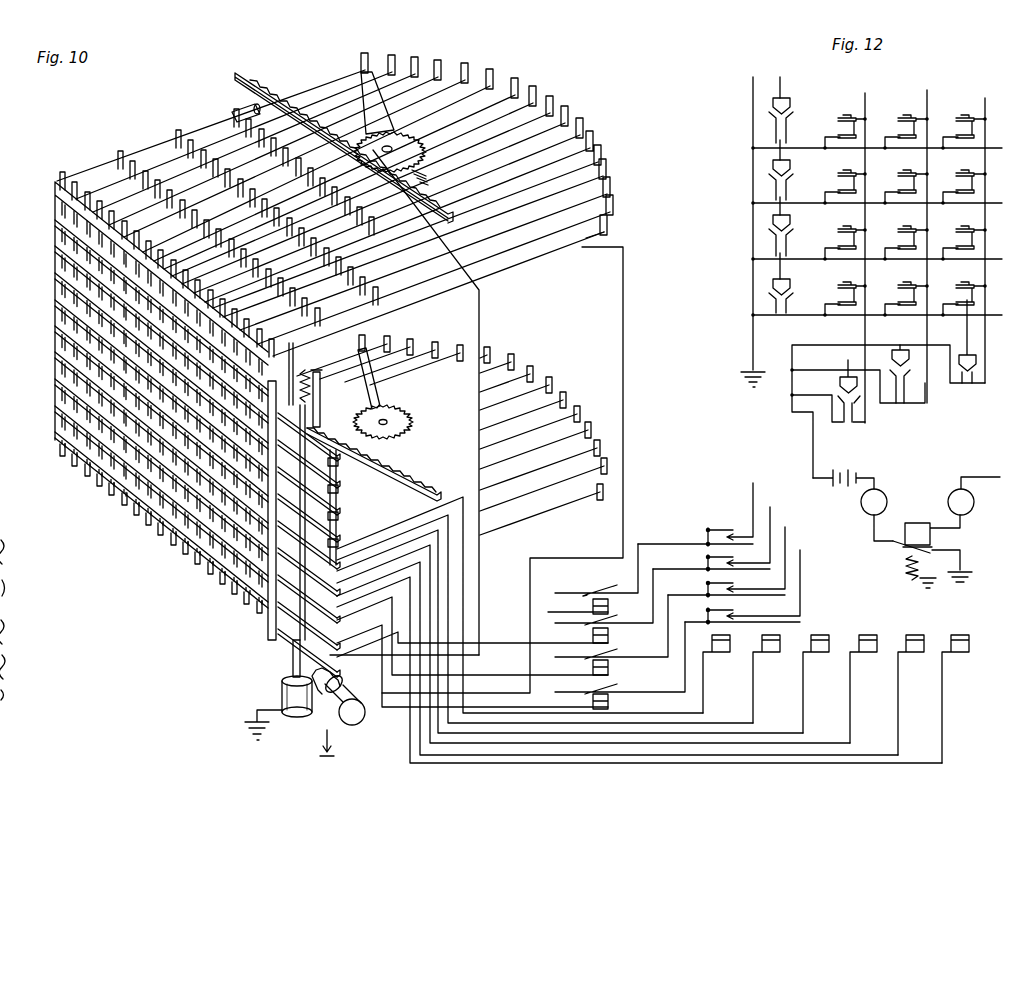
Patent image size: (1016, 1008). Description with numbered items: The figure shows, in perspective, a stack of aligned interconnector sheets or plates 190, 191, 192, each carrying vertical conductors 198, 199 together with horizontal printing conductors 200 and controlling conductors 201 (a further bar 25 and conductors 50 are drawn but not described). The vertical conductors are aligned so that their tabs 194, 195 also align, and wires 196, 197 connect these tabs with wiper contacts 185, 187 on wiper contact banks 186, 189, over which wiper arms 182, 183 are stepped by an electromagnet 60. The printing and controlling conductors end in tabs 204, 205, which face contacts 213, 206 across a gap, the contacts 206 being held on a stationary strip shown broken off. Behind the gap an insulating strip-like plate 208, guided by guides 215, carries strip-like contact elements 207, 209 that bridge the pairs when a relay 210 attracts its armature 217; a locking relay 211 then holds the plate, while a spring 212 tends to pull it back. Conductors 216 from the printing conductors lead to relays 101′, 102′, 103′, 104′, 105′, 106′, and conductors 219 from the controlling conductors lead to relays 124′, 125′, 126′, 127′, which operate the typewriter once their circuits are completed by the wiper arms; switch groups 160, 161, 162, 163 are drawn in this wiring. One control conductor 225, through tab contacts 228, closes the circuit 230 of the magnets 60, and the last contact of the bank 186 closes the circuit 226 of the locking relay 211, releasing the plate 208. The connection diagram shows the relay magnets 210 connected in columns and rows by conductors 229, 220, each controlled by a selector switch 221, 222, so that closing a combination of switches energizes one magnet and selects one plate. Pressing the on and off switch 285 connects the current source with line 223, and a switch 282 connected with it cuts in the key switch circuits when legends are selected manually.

In FIG. 10, the interconnector sheet or plate 190 is at (62, 208).
In FIG. 10, the vertical conductor 199 is at (67, 288).
In FIG. 10, the horizontal printing conductor 200 is at (65, 310).
In FIG. 10, the vertical conductor 198 is at (70, 383).
In FIG. 10, the horizontal controlling conductor 201 is at (70, 400).
In FIG. 10, the bar 25 is at (63, 432).
In FIG. 10, the control conductor 225 is at (177, 522).
In FIG. 10, the tab 194 is at (67, 450).
In FIG. 10, the tab 195 is at (62, 170).
In FIG. 10, the interconnector sheet or plate 191 is at (123, 195).
In FIG. 10, the interconnector sheet or plate 192 is at (173, 160).
In FIG. 10, the wire 196 is at (327, 70).
In FIG. 10, the wiper contact 185 is at (538, 83).
In FIG. 10, the wiper contact bank 186 is at (588, 108).
In FIG. 10, the rack 50 is at (340, 140).
In FIG. 10, the wiper arm 182 is at (397, 111).
In FIG. 10, the electromagnet 60 is at (247, 112).
In FIG. 10, the circuit 230 is at (480, 318).
In FIG. 10, the circuit 226 is at (586, 254).
In FIG. 10, the wire 197 is at (355, 332).
In FIG. 10, the wiper contact 187 is at (517, 355).
In FIG. 10, the wiper contact bank 189 is at (564, 370).
In FIG. 10, the wiper arm 183 is at (375, 387).
In FIG. 10, the strip-like contact element 209 is at (451, 482).
In FIG. 10, the contact 213 is at (332, 473).
In FIG. 10, the guide 215 is at (318, 392).
In FIG. 10, the spring 212 is at (270, 382).
In FIG. 10, the tab 205 is at (270, 640).
In FIG. 10, the tab 204 is at (300, 423).
In FIG. 10, the strip-like contact element 207 is at (303, 537).
In FIG. 10, the contact 206 is at (382, 625).
In FIG. 10, the tab contact 228 is at (395, 652).
In FIG. 10, the conductor 216 is at (448, 570).
In FIG. 10, the conductor 219 is at (498, 642).
In FIG. 10, the strip-like plate 208 is at (297, 638).
In FIG. 10, the relay 210 is at (293, 707).
In FIG. 12, the relay 210 is at (967, 300).
In FIG. 10, the relay armature 217 is at (282, 663).
In FIG. 10, the locking relay 211 is at (350, 717).
In FIG. 10, the switch 160 is at (753, 483).
In FIG. 10, the switch 161 is at (770, 507).
In FIG. 10, the switch 162 is at (787, 527).
In FIG. 10, the switch 163 is at (800, 563).
In FIG. 10, the relay 127′ is at (608, 603).
In FIG. 10, the relay 126′ is at (608, 633).
In FIG. 10, the relay 125′ is at (608, 667).
In FIG. 10, the relay 124′ is at (608, 702).
In FIG. 10, the relay 101′ is at (717, 652).
In FIG. 10, the relay 102′ is at (766, 652).
In FIG. 10, the relay 103′ is at (815, 652).
In FIG. 10, the relay 104′ is at (863, 652).
In FIG. 10, the relay 105′ is at (910, 652).
In FIG. 10, the relay 106′ is at (957, 652).
In FIG. 12, the selector switch 222 is at (770, 175).
In FIG. 12, the conductor 220 is at (795, 315).
In FIG. 12, the conductor 229 is at (987, 268).
In FIG. 12, the selector switch 221 is at (970, 360).
In FIG. 12, the line 223 is at (815, 452).
In FIG. 12, the on and off switch 285 is at (930, 529).
In FIG. 12, the switch 282 is at (899, 556).